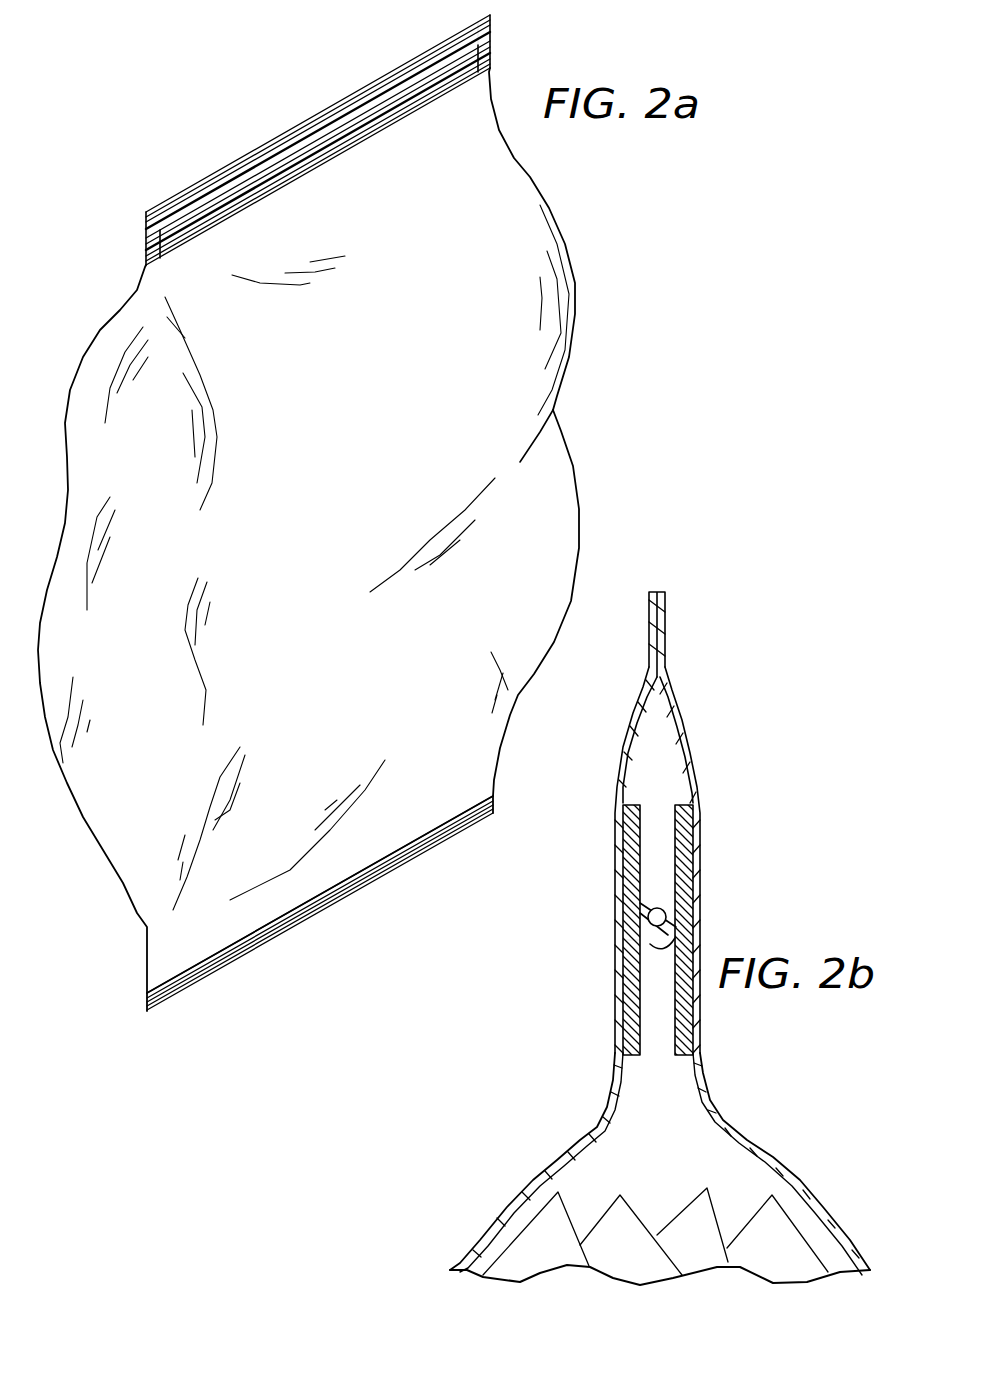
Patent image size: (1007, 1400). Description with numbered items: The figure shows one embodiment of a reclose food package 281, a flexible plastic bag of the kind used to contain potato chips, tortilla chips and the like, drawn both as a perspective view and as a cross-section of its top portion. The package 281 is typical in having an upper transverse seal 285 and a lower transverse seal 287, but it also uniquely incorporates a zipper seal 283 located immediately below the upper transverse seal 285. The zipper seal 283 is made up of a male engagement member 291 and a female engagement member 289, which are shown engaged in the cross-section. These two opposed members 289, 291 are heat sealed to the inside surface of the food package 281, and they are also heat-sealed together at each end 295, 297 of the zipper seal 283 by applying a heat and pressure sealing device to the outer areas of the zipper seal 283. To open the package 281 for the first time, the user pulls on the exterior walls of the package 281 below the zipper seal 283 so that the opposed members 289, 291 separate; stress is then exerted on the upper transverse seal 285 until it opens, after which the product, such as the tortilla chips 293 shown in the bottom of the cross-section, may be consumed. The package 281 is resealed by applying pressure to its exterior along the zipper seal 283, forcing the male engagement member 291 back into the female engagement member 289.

In FIG. 2a, the reclose food package 281 is at (557, 492).
In FIG. 2b, the reclose food package 281 is at (800, 1168).
In FIG. 2a, the zipper seal 283 is at (338, 133).
In FIG. 2b, the zipper seal 283 is at (690, 800).
In FIG. 2a, the upper transverse seal 285 is at (250, 150).
In FIG. 2b, the upper transverse seal 285 is at (667, 623).
In FIG. 2a, the lower transverse seal 287 is at (320, 912).
In FIG. 2b, the female engagement member 289 is at (623, 952).
In FIG. 2b, the male engagement member 291 is at (682, 900).
In FIG. 2b, the tortilla chips 293 is at (687, 1208).
In FIG. 2a, the end 295 is at (167, 233).
In FIG. 2a, the end 297 is at (478, 53).